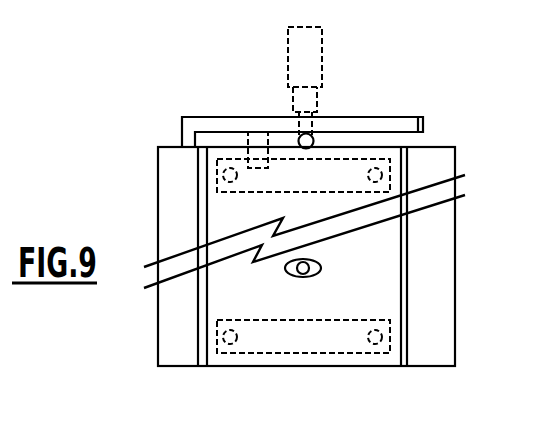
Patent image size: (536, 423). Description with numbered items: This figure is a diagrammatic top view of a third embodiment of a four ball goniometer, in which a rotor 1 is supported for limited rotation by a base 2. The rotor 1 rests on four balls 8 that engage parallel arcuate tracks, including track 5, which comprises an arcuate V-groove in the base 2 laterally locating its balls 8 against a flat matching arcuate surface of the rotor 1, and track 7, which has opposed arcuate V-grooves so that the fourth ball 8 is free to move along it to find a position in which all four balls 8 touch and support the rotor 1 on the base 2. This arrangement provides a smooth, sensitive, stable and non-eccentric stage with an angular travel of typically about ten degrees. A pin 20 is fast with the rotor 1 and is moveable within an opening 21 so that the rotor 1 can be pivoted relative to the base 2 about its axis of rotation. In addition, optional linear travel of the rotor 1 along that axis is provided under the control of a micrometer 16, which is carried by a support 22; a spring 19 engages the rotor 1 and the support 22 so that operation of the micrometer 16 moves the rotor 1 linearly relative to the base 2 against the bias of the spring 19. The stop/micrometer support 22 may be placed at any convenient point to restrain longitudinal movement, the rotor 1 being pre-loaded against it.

The rotor 1 is at (265, 358).
The base 2 is at (158, 328).
The arcuate track 5 is at (373, 353).
The arcuate track 7 is at (222, 192).
The balls 8 is at (222, 171).
The micrometer 16 is at (322, 68).
The spring 19 is at (258, 132).
The pin 20 is at (372, 271).
The opening 21 is at (288, 275).
The stop/micrometer support 22 is at (182, 117).